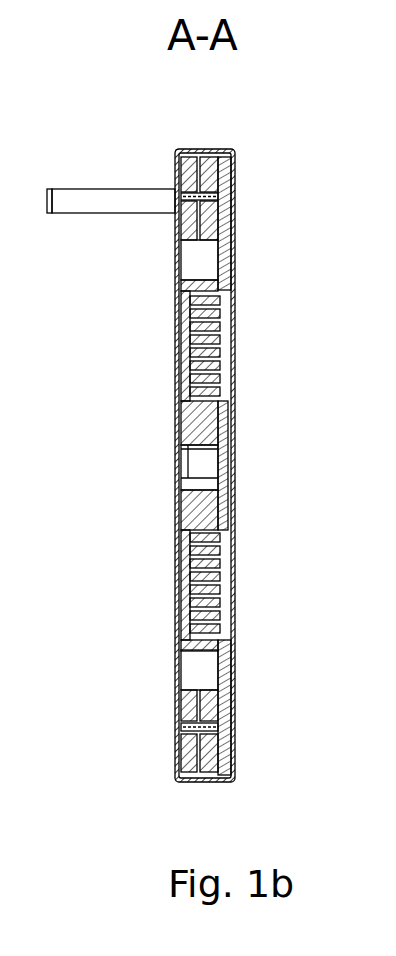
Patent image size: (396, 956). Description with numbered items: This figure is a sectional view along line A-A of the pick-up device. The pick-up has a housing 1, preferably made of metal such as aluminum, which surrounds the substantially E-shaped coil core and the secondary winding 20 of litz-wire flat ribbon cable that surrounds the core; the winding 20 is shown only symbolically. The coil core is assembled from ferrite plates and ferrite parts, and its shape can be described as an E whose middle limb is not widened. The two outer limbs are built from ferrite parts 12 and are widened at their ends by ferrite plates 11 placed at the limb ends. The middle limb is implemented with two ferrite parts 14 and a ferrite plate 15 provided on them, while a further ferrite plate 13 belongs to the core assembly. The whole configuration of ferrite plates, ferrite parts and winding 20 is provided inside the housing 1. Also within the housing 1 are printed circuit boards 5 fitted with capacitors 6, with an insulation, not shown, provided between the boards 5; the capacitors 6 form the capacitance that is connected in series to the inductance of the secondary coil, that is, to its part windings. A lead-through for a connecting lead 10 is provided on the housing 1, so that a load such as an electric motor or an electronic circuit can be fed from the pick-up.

The housing 1 is at (178, 463).
The printed circuit board 5 is at (222, 194).
The capacitors 6 is at (178, 164).
The connecting lead 10 is at (87, 197).
The ferrite plate 11 is at (222, 705).
The ferrite part 12 is at (182, 288).
The ferrite plate 13 is at (180, 362).
The ferrite part 14 is at (222, 420).
The ferrite plate 15 is at (222, 470).
The winding made of litz-wire flat ribbon cable 20 is at (222, 330).